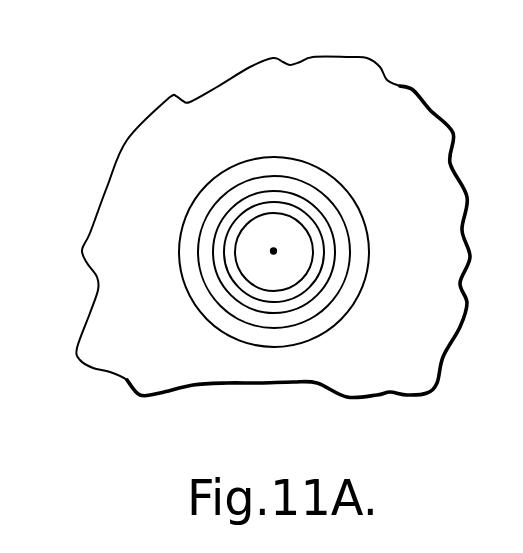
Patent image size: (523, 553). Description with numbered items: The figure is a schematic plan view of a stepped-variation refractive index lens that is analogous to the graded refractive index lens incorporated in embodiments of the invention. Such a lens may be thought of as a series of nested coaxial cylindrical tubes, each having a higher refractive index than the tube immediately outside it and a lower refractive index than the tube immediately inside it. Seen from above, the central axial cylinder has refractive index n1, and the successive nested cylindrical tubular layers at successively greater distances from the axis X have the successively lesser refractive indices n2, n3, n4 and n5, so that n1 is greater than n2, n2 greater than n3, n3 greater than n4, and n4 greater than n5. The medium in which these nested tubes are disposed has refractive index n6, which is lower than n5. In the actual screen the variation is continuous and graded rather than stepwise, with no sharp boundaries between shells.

The refractive index of the axial cylinder n1 is at (247, 268).
The refractive index of the first nested cylindrical tubular layer n2 is at (228, 247).
The refractive index of the second nested cylindrical tubular layer n3 is at (233, 212).
The refractive index of the third nested cylindrical tubular layer n4 is at (257, 183).
The refractive index of the outermost nested cylindrical tubular layer n5 is at (275, 163).
The refractive index of the surrounding medium n6 is at (370, 103).
The axis X is at (275, 253).